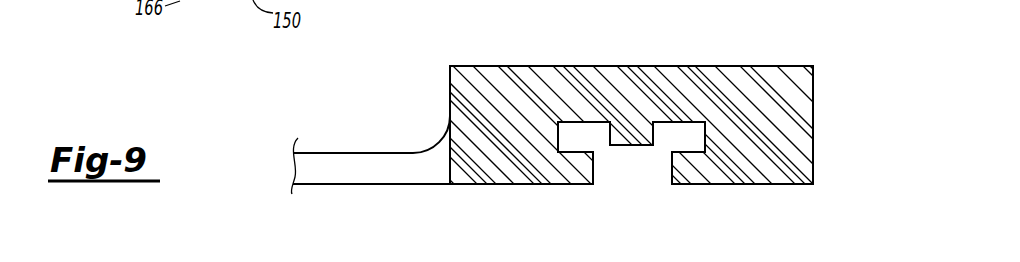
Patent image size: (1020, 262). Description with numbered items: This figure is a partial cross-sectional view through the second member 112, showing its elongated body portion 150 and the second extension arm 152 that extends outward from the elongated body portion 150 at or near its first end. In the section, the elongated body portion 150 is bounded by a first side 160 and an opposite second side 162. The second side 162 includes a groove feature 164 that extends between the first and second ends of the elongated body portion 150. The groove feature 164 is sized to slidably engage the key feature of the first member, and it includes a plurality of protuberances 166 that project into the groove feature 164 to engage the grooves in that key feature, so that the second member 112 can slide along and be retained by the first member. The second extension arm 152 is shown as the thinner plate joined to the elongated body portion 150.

The second member 112 is at (664, 57).
The elongated body portion 150 is at (711, 63).
The second extension arm 152 is at (345, 153).
The first side 160 is at (578, 66).
The second side 162 is at (476, 185).
The groove feature 164 is at (597, 187).
The protuberances 166 is at (627, 146).